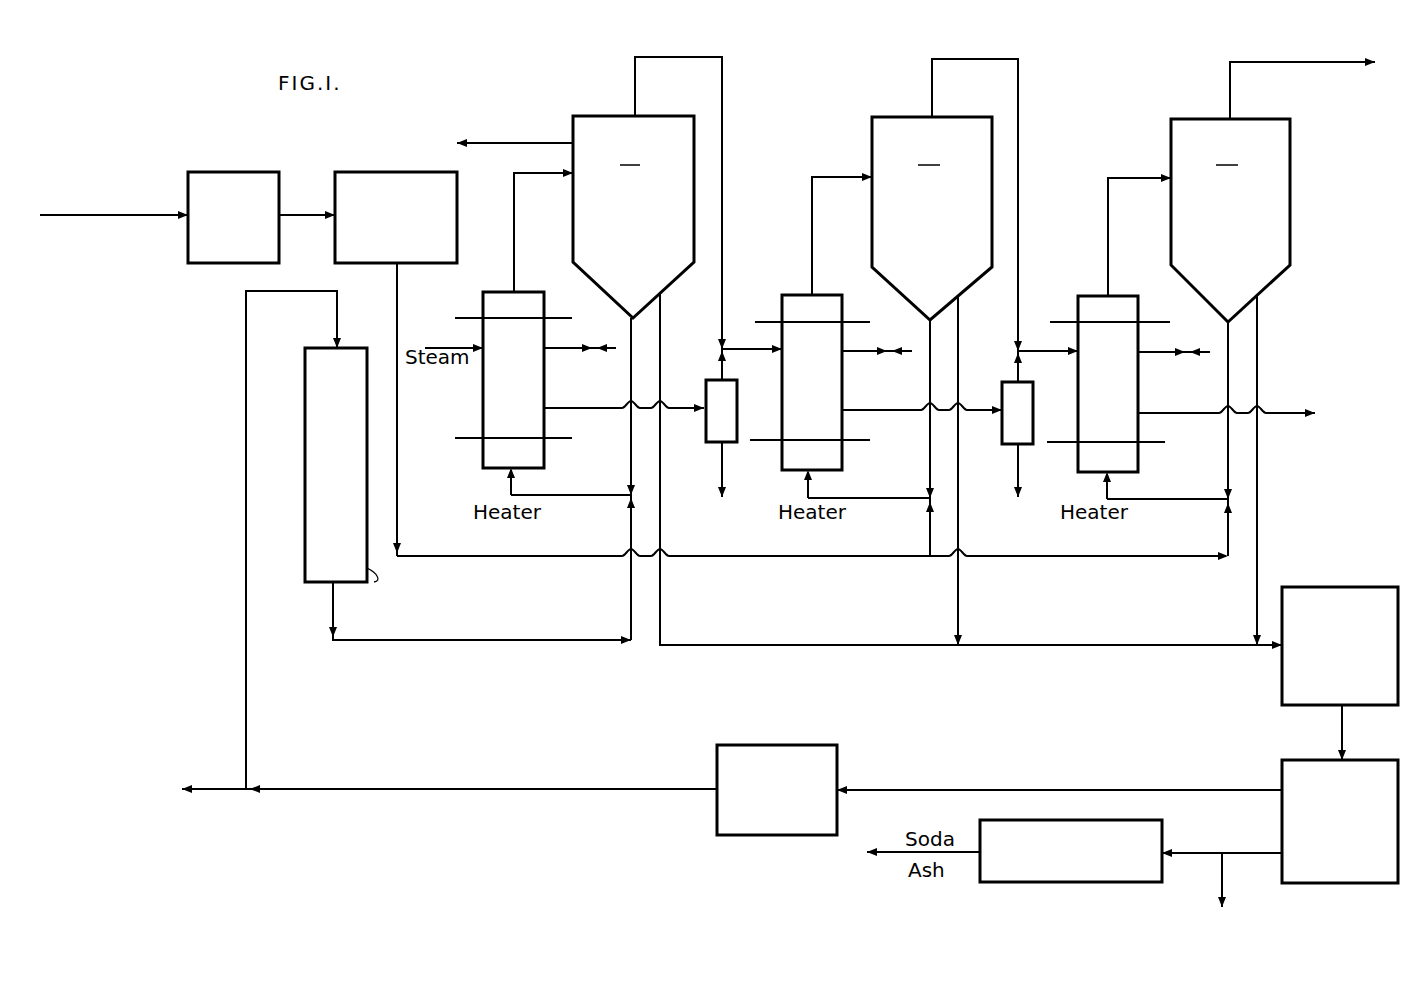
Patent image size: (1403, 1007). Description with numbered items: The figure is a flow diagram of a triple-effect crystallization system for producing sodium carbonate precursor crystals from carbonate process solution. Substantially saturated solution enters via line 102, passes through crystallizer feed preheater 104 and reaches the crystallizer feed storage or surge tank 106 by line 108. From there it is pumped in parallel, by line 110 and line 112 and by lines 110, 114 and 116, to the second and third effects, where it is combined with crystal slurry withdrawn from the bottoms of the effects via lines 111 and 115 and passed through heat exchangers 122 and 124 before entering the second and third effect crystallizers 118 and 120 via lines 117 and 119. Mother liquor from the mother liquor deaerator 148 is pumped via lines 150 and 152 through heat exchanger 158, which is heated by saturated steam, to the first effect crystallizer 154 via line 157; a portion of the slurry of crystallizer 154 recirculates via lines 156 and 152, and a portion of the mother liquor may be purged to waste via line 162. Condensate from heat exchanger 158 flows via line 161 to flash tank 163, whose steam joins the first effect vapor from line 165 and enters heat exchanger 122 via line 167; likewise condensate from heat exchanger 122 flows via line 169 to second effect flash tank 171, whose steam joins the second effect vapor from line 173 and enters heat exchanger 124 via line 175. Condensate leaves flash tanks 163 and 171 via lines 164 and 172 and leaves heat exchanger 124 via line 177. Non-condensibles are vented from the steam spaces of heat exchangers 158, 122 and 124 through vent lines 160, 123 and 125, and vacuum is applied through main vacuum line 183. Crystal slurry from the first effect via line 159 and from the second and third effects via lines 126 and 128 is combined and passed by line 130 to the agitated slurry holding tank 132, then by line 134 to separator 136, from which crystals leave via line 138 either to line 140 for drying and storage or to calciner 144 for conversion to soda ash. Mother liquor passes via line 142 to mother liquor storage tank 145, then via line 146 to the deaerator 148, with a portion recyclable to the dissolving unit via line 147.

The line 102 is at (167, 216).
The crystallizer feed preheater 104 is at (233, 217).
The crystallizer feed storage or surge tank 106 is at (396, 217).
The line 108 is at (305, 214).
The line 110 is at (397, 508).
The line 111 is at (933, 389).
The line 112 is at (898, 478).
The line 114 is at (1124, 541).
The line 115 is at (1226, 388).
The line 116 is at (1190, 478).
The line 117 is at (812, 209).
The second effect crystallizer 118 is at (932, 218).
The line 119 is at (1108, 226).
The third effect crystallizer 120 is at (1230, 220).
The heat exchanger 122 is at (810, 382).
The noncondensed-gas vent line 123 is at (860, 348).
The heat exchanger 124 is at (1108, 384).
The noncondensed-gas vent line 125 is at (1160, 350).
The line 126 is at (958, 509).
The line 128 is at (1257, 538).
The line 130 is at (1266, 646).
The agitated slurry holding tank 132 is at (1340, 646).
The line 134 is at (1337, 730).
The separator 136 is at (1340, 821).
The line 138 is at (1202, 854).
The line 140 is at (1218, 872).
The line 142 is at (1010, 775).
The calciner 144 is at (1071, 851).
The mother liquor storage tank 145 is at (777, 790).
The line 146 is at (246, 431).
The line 147 is at (218, 782).
The mother liquor deaerator 148 is at (386, 469).
The line 150 is at (478, 617).
The line 152 is at (594, 481).
The first effect crystallizer 154 is at (633, 217).
The line 156 is at (631, 383).
The line 157 is at (514, 213).
The heat exchanger 158 is at (513, 380).
The line 159 is at (660, 517).
The noncondensed-gas vent line 160 is at (564, 346).
The line 161 is at (602, 412).
The line 162 is at (517, 144).
The flash tank 163 is at (732, 420).
The line 164 is at (722, 468).
The line 165 is at (722, 112).
The line 167 is at (732, 340).
The line 169 is at (892, 413).
The second effect flash tank 171 is at (1028, 420).
The line 172 is at (1018, 470).
The line 173 is at (1018, 128).
The line 175 is at (1026, 352).
The line 177 is at (1277, 412).
The main vacuum line 183 is at (1305, 45).